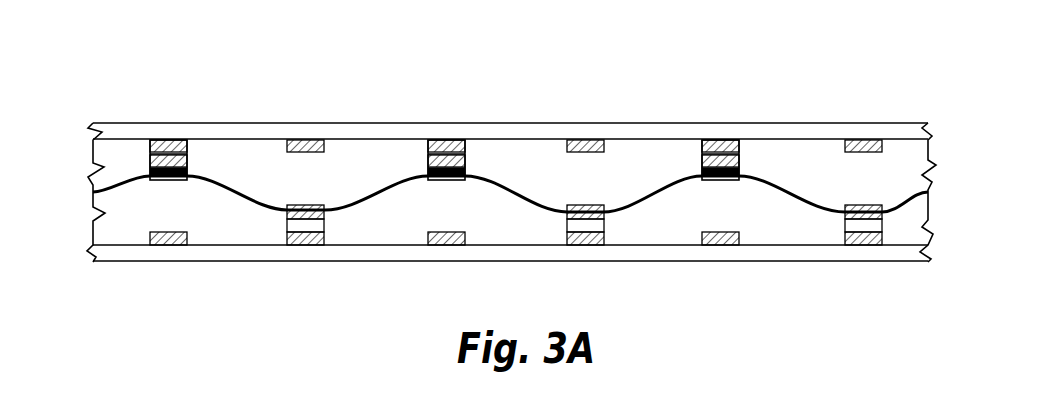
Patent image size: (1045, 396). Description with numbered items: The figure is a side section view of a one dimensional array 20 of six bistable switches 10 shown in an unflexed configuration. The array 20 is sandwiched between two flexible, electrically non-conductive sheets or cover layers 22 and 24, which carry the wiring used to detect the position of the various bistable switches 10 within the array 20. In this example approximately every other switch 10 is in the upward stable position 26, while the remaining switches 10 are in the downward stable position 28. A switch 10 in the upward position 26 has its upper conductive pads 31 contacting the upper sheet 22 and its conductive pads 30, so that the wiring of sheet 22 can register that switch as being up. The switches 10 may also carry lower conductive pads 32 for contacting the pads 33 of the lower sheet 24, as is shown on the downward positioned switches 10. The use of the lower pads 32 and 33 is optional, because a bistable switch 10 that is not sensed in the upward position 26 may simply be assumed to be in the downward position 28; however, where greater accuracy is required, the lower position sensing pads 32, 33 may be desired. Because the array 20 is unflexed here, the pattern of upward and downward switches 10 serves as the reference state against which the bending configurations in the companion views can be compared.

The bistable switch 10 is at (142, 173).
The one dimensional array 20 is at (930, 214).
The cover layer 22 is at (892, 133).
The cover layer 24 is at (913, 257).
The upward stable position 26 is at (200, 152).
The downward stable position 28 is at (268, 222).
The conductive pad 30 is at (160, 145).
The upper conductive pad 31 is at (165, 156).
The lower conductive pad 32 is at (203, 183).
The pad 33 is at (158, 232).